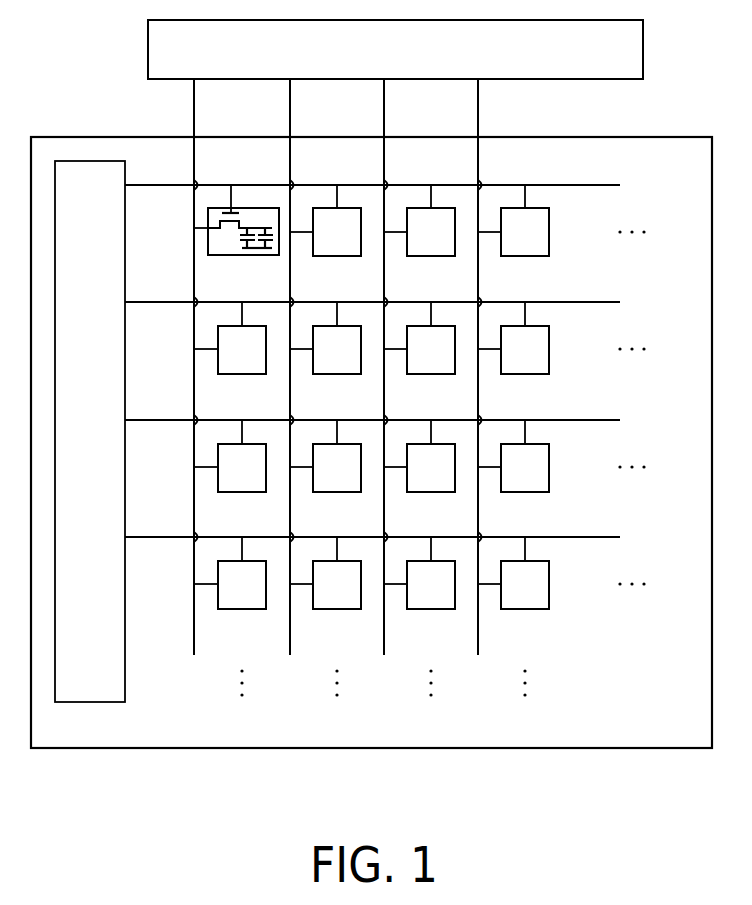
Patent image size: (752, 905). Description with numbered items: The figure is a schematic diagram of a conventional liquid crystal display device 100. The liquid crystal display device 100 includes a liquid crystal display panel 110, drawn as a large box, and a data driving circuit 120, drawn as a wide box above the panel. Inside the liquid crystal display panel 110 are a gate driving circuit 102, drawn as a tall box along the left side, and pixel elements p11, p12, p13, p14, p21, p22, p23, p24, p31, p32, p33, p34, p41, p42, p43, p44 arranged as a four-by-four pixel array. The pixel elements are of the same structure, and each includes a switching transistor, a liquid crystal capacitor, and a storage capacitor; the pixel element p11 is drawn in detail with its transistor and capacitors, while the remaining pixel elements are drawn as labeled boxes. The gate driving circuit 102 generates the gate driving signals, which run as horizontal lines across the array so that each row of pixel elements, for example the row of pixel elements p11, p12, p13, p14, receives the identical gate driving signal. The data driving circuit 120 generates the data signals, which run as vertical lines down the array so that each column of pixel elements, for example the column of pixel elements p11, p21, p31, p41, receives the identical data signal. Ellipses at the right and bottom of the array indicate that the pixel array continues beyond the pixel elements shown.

The liquid crystal display device 100 is at (568, 804).
The gate driving circuit 102 is at (108, 676).
The liquid crystal display panel 110 is at (693, 734).
The data driving circuit 120 is at (632, 72).
The pixel element p11 is at (241, 256).
The pixel element p12 is at (356, 244).
The pixel element p13 is at (450, 244).
The pixel element p14 is at (544, 244).
The pixel element p21 is at (261, 360).
The pixel element p22 is at (356, 360).
The pixel element p23 is at (450, 360).
The pixel element p24 is at (544, 360).
The pixel element p31 is at (261, 478).
The pixel element p32 is at (356, 478).
The pixel element p33 is at (450, 478).
The pixel element p34 is at (544, 478).
The pixel element p41 is at (261, 596).
The pixel element p42 is at (356, 596).
The pixel element p43 is at (450, 596).
The pixel element p44 is at (544, 596).